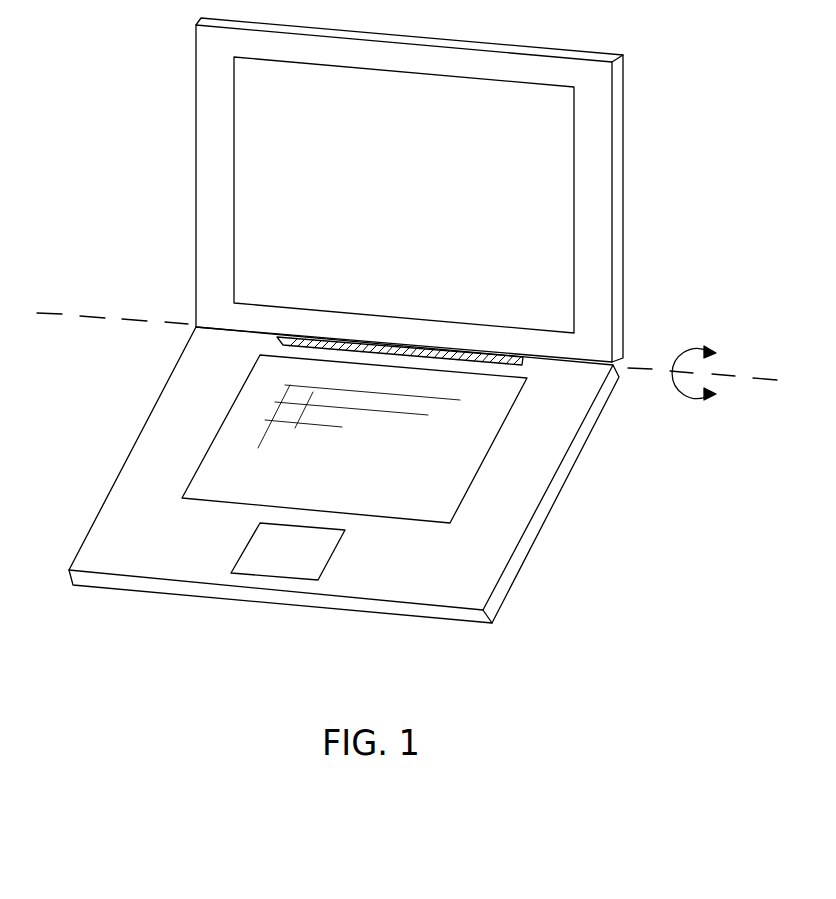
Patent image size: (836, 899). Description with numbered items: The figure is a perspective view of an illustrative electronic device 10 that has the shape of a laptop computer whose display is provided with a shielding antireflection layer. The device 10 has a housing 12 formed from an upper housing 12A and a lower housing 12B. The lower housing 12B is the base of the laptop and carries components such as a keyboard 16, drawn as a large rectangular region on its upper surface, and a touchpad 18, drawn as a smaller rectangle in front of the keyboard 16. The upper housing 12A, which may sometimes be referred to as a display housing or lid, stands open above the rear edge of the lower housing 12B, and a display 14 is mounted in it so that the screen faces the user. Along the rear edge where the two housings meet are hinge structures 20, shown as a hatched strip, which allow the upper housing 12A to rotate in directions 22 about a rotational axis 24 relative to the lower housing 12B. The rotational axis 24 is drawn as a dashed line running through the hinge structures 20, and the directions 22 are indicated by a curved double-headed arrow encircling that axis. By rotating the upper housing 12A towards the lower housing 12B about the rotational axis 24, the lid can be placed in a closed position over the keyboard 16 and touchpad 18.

The electronic device 10 is at (693, 53).
The housing 12 is at (623, 303).
The upper housing 12A is at (185, 25).
The lower housing 12B is at (179, 336).
The display 14 is at (540, 183).
The keyboard 16 is at (488, 457).
The touchpad 18 is at (332, 558).
The hinge structures 20 is at (497, 352).
The directions 22 is at (700, 401).
The rotational axis 24 is at (83, 315).